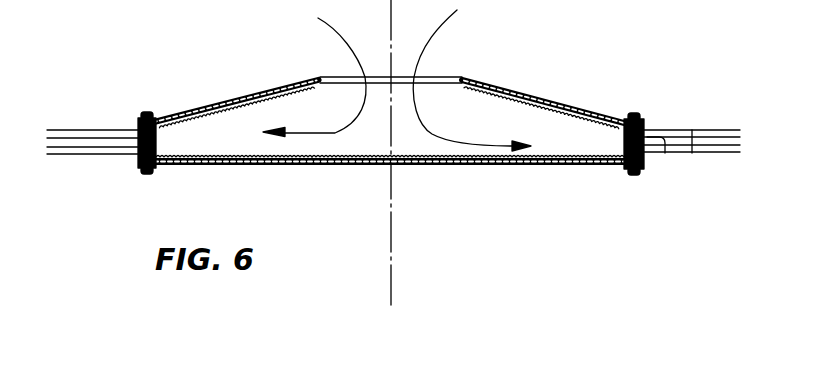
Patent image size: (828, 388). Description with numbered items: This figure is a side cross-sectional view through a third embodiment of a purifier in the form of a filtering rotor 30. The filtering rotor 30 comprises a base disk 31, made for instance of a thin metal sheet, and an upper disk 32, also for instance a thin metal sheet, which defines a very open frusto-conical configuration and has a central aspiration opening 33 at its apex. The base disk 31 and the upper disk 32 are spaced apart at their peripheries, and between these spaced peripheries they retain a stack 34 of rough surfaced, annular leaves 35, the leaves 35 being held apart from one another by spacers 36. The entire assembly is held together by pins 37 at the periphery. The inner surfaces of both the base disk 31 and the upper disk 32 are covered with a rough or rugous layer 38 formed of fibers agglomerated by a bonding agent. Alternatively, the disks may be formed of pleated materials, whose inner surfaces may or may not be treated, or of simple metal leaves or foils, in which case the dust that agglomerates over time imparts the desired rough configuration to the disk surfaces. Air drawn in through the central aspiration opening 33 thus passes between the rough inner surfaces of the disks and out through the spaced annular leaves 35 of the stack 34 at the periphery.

The filtering rotor 30 is at (531, 67).
The base disk 31 is at (503, 167).
The upper disk 32 is at (494, 84).
The central aspiration opening 33 is at (328, 76).
The stack 34 is at (699, 118).
The annular leaves 35 is at (692, 130).
The spacers 36 is at (655, 141).
The pins 37 is at (637, 117).
The rough layer 38 is at (248, 151).